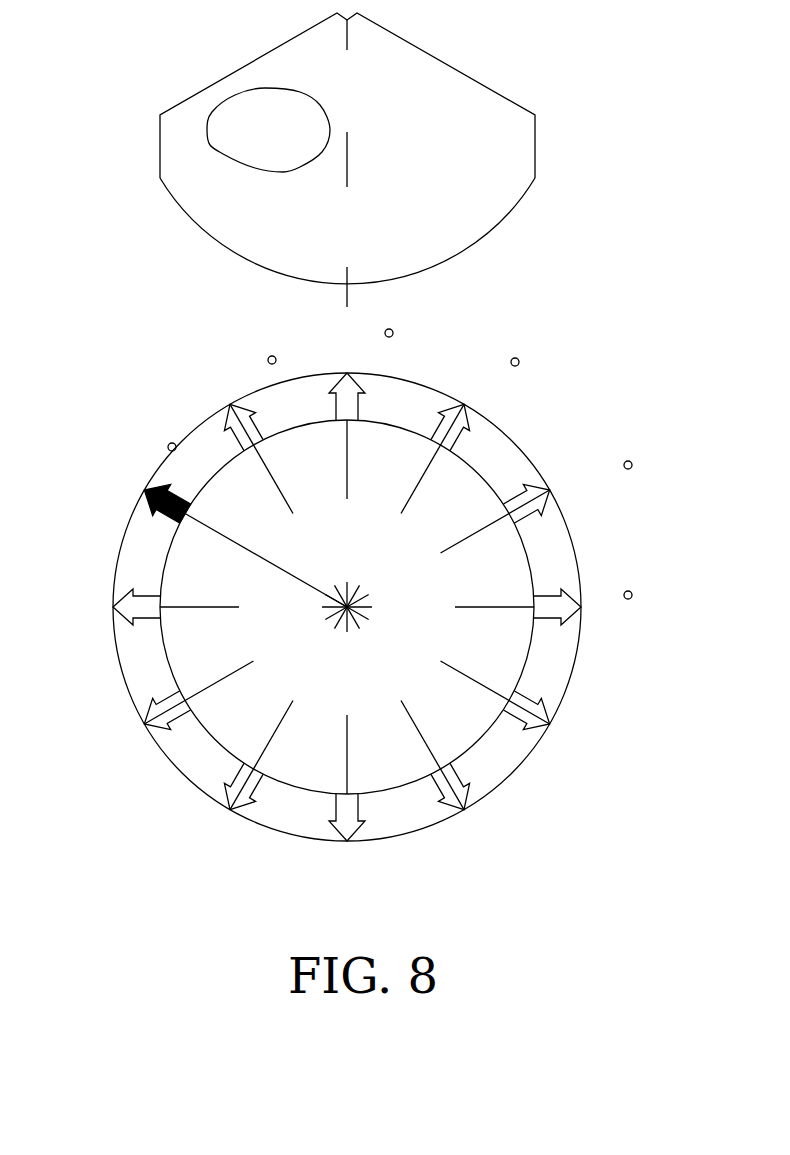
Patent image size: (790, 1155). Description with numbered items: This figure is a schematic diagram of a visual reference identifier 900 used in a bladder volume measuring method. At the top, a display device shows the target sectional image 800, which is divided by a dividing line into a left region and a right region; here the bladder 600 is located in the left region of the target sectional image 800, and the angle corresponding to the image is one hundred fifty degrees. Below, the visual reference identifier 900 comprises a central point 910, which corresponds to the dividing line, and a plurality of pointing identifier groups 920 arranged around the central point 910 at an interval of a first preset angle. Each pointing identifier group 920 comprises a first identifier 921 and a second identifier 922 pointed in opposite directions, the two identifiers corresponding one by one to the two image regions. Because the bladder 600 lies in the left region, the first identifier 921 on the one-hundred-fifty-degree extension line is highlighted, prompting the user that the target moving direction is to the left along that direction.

The bladder 600 is at (258, 110).
The target sectional image 800 is at (240, 200).
The visual reference identifier 900 is at (597, 380).
The central point 910 is at (347, 607).
The pointing identifier group 920 is at (552, 738).
The first identifier 921 is at (155, 513).
The second identifier 922 is at (552, 720).